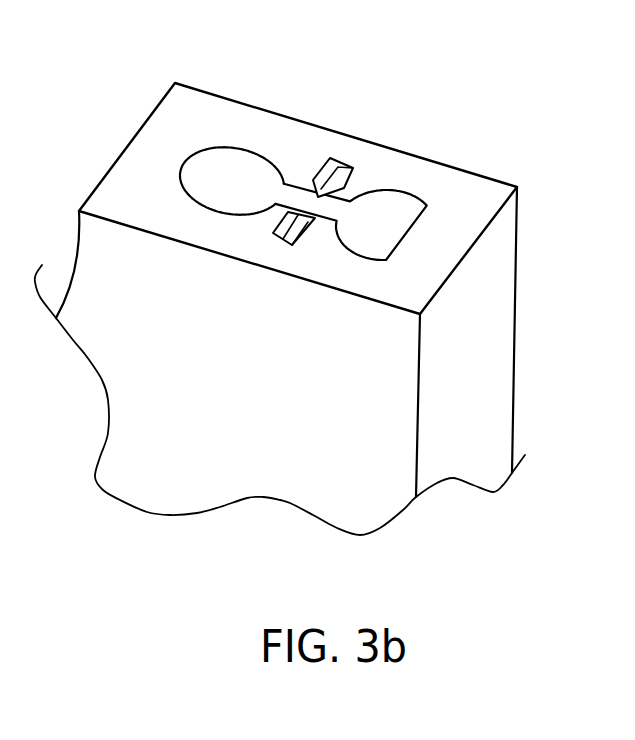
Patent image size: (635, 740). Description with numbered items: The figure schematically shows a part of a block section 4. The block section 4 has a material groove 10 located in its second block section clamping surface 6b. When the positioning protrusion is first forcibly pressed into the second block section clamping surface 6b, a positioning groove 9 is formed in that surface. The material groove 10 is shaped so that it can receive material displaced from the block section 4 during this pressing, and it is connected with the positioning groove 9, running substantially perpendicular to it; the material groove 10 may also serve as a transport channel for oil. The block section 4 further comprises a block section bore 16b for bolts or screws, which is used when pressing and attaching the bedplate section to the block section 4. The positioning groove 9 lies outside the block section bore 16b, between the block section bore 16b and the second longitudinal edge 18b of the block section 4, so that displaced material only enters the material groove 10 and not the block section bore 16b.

The block section 4 is at (440, 178).
The second block section clamping surface 6b is at (383, 164).
The second longitudinal edge 18b is at (475, 243).
The block section bore 16b is at (233, 163).
The material groove 10 is at (289, 193).
The positioning groove 9 is at (355, 182).